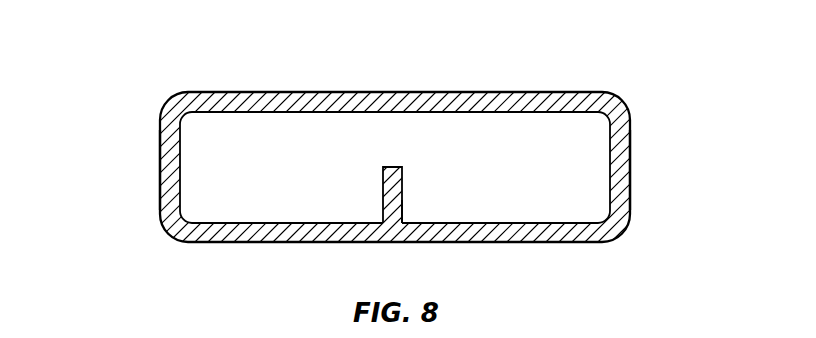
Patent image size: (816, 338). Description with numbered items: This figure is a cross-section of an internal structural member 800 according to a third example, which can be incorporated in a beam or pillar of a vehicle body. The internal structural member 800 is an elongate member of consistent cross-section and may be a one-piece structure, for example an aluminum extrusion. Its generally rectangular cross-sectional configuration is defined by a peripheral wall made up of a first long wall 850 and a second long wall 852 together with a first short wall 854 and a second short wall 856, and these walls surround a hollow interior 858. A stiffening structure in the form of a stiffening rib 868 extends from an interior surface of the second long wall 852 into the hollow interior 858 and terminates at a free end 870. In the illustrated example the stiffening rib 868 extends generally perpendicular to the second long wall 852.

The internal structural member 800 is at (126, 72).
The first long wall 850 is at (498, 92).
The second long wall 852 is at (206, 223).
The first short wall 854 is at (160, 172).
The second short wall 856 is at (630, 172).
The hollow interior 858 is at (490, 160).
The stiffening rib 868 is at (402, 205).
The free end 870 is at (390, 166).